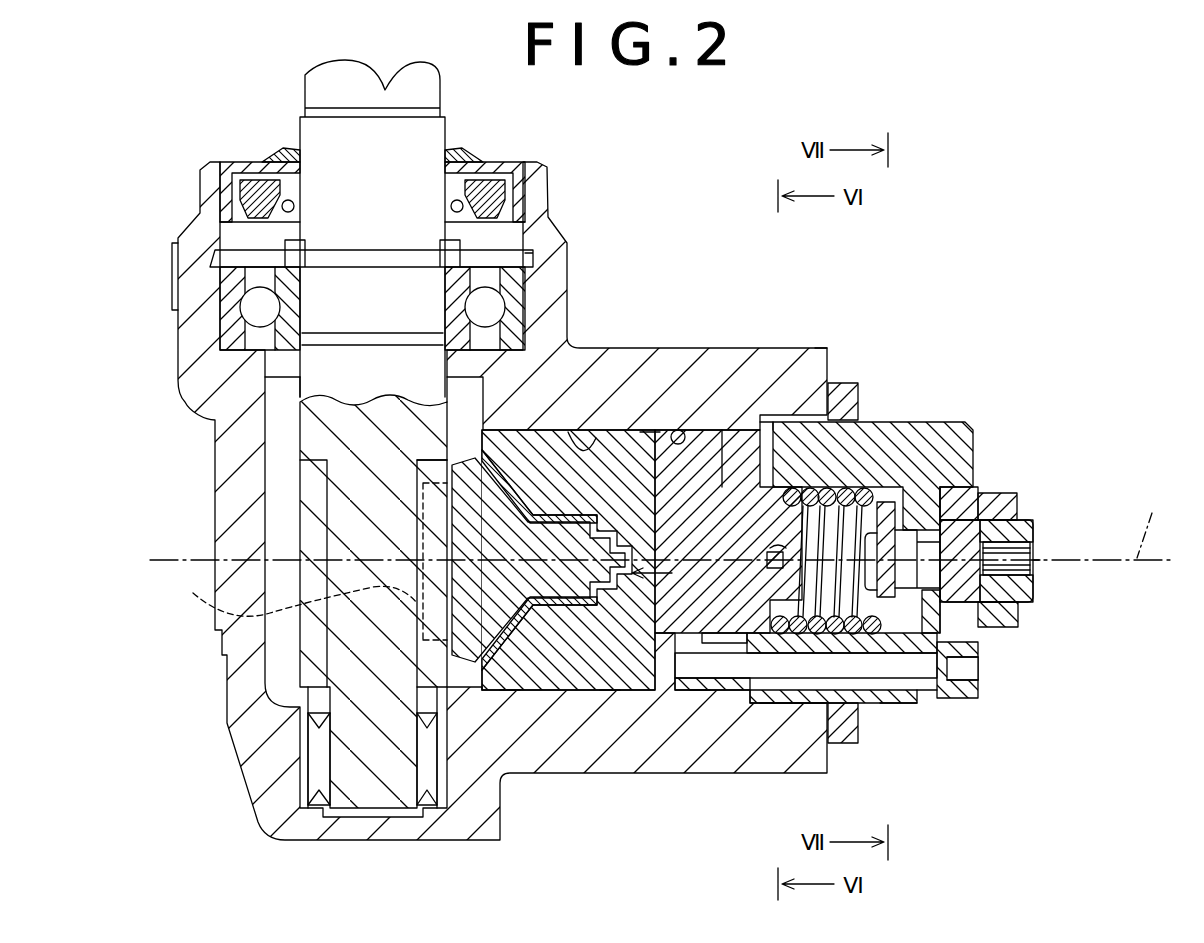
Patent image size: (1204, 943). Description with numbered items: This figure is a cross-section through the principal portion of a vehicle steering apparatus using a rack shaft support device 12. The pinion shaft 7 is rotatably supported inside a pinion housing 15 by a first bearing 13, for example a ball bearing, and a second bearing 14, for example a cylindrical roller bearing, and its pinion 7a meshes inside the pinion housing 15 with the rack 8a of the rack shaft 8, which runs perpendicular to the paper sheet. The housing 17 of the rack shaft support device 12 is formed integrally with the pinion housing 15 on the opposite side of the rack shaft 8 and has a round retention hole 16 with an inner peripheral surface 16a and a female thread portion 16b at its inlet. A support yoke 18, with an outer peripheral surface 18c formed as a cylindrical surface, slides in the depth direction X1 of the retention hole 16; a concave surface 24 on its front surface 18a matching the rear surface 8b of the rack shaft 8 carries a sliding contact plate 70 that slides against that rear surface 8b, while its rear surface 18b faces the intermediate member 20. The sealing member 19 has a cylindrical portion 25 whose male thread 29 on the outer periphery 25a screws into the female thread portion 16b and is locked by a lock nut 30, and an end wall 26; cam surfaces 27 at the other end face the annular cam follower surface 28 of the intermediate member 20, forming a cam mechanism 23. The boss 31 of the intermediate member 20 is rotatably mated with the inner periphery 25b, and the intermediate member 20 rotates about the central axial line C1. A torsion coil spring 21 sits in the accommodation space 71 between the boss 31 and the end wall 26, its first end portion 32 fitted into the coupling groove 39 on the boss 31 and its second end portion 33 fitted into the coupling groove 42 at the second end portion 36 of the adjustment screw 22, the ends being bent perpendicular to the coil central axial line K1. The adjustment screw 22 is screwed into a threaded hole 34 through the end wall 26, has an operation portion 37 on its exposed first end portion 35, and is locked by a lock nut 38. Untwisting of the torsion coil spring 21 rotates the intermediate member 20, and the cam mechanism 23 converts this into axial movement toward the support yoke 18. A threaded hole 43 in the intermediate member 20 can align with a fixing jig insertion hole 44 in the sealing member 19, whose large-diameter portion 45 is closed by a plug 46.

The pinion shaft 7 is at (460, 137).
The pinion 7a is at (313, 520).
The rack shaft 8 is at (461, 680).
The rack 8a is at (285, 598).
The rear surface 8b is at (522, 700).
The rack shaft support device 12 is at (1060, 576).
The first bearing 13 is at (258, 300).
The second bearing 14 is at (318, 757).
The pinion housing 15 is at (212, 710).
The retention hole 16 is at (603, 346).
The inner peripheral surface 16a is at (650, 430).
The female thread portion 16b is at (808, 704).
The housing 17 is at (672, 691).
The support yoke 18 is at (596, 640).
The front surface 18a is at (462, 468).
The rear surface 18b is at (700, 691).
The outer peripheral surface 18c is at (610, 691).
The sealing member 19 is at (873, 485).
The intermediate member 20 is at (677, 430).
The torsion coil spring 21 is at (845, 383).
The adjustment screw 22 is at (1021, 496).
The cam mechanism 23 is at (811, 408).
The concave surface 24 is at (437, 634).
The cylindrical portion 25 is at (878, 455).
The outer periphery 25a is at (912, 704).
The inner periphery 25b is at (907, 422).
The end wall 26 is at (1005, 530).
The cam surfaces 27 is at (712, 500).
The cam follower surface 28 is at (728, 470).
The male thread 29 is at (860, 706).
The lock nut 30 is at (845, 704).
The boss 31 is at (884, 502).
The first end portion 32 is at (776, 552).
The second end portion 33 is at (953, 500).
The threaded hole 34 is at (979, 704).
The first end portion 35 is at (1000, 500).
The second end portion 36 is at (912, 679).
The operation portion 37 is at (1012, 552).
The lock nut 38 is at (1020, 613).
The coupling groove 39 is at (824, 348).
The coupling groove 42 is at (1011, 437).
The threaded hole 43 is at (720, 691).
The fixing jig insertion hole 44 is at (768, 703).
The large-diameter portion 45 is at (965, 690).
The plug 46 is at (950, 680).
The sliding contact plate 70 is at (580, 435).
The accommodation space 71 is at (918, 700).
The central axial line C1 is at (637, 547).
The coil central axial line K1 is at (1157, 521).
The depth direction X1 is at (655, 691).